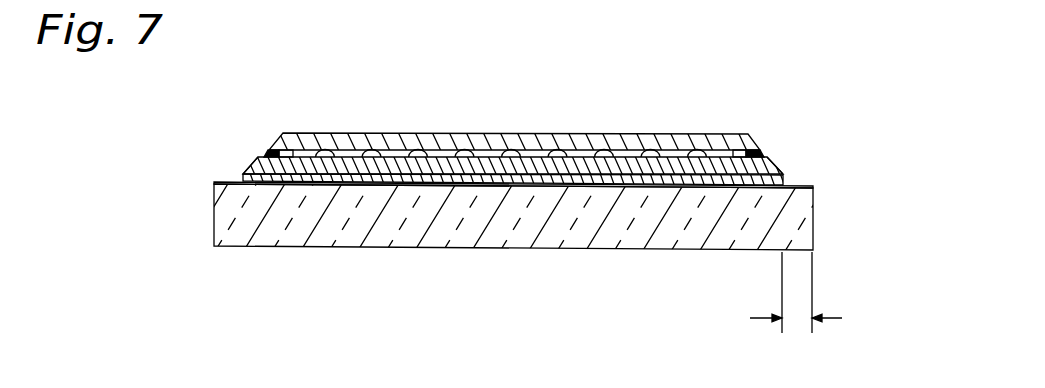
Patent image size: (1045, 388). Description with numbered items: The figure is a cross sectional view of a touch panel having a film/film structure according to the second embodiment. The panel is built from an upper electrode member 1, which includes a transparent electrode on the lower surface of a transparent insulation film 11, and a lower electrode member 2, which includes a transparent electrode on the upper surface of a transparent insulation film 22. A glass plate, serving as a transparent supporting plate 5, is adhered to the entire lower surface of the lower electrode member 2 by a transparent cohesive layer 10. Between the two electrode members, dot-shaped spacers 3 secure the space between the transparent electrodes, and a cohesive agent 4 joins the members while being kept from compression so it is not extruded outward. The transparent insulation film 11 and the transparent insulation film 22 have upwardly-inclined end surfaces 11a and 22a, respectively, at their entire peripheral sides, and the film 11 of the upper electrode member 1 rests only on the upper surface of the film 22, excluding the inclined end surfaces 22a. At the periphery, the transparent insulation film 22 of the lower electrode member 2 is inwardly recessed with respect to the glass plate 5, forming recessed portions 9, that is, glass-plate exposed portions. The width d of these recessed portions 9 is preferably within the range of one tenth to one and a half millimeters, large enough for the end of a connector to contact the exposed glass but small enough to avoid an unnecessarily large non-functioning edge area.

The upper electrode member 1 is at (672, 137).
The lower electrode member 2 is at (442, 172).
The dot-shaped spacers 3 is at (604, 162).
The cohesive agent 4 is at (277, 157).
The glass plate (transparent supporting plate) 5 is at (472, 249).
The recessed portions (glass-plate exposed portions) 9 is at (216, 182).
The transparent cohesive layer 10 is at (243, 176).
The transparent insulation film 11 is at (620, 136).
The upwardly-inclined end surfaces 11a is at (272, 139).
The transparent insulation film 22 is at (681, 180).
The upwardly-inclined end surfaces 22a is at (248, 162).
The width of the recessed portions d is at (796, 310).